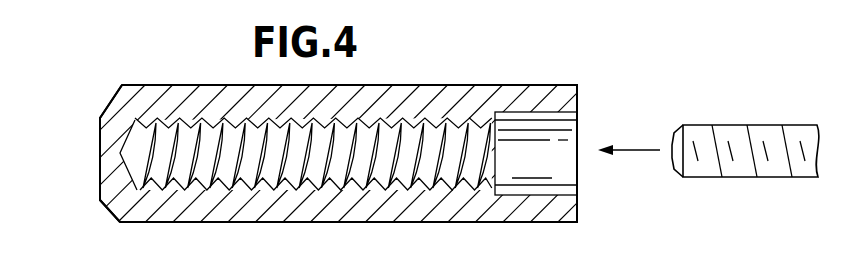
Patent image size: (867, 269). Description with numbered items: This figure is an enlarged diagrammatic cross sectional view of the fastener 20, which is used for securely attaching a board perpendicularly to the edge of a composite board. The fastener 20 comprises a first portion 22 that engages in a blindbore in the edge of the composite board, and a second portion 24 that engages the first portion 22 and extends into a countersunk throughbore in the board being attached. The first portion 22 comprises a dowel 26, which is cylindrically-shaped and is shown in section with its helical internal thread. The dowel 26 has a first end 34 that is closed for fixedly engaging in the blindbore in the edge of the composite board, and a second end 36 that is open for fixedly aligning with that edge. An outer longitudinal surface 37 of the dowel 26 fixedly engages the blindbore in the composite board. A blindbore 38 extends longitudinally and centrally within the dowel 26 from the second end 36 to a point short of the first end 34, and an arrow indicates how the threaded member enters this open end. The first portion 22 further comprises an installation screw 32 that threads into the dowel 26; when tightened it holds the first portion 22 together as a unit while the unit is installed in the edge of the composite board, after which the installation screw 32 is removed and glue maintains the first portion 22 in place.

The fastener 20 is at (584, 72).
The first portion 22 is at (376, 80).
The second portion 24 is at (745, 112).
The dowel 26 is at (147, 76).
The installation screw 32 is at (720, 125).
The first end 34 is at (100, 186).
The second end 36 is at (578, 210).
The outer longitudinal surface 37 is at (240, 85).
The blindbore 38 is at (540, 195).